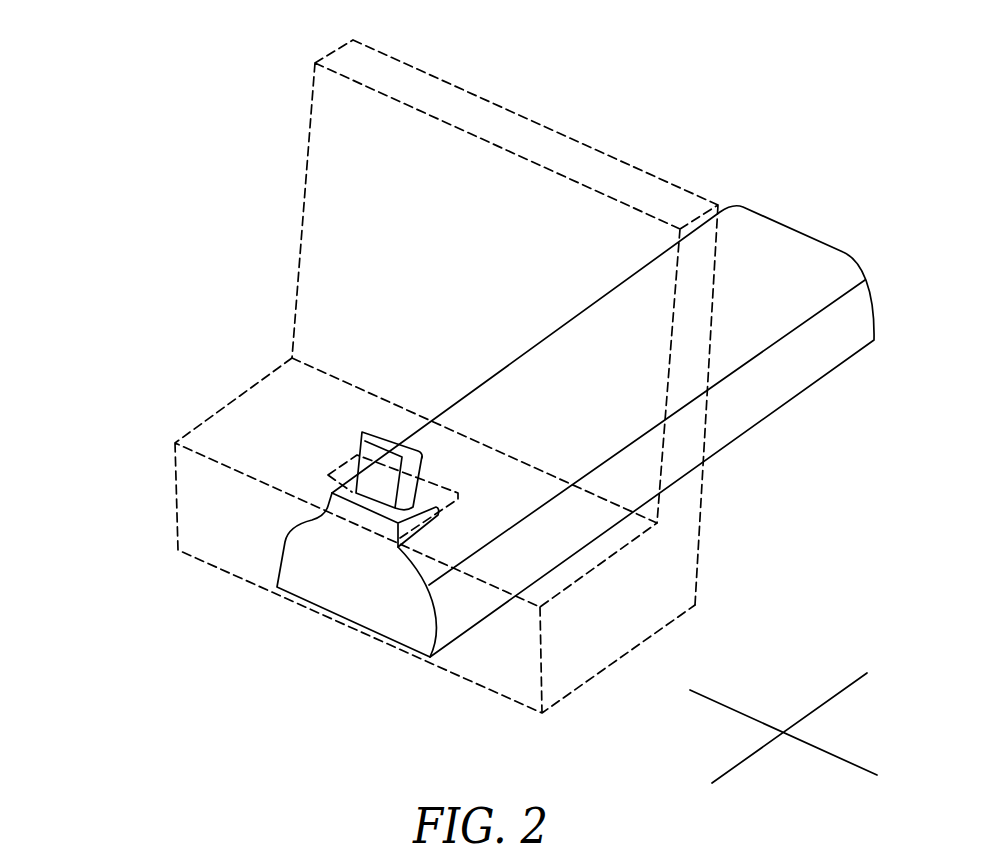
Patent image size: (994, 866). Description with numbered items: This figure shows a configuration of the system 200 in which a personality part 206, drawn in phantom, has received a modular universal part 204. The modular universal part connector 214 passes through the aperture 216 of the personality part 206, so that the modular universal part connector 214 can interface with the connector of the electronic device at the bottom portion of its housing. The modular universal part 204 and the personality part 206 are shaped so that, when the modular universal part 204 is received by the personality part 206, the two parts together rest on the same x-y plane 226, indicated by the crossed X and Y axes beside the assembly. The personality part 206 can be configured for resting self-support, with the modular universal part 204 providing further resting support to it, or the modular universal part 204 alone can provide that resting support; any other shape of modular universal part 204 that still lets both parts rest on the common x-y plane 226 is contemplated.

The system 200 is at (88, 34).
The modular universal part 204 is at (790, 227).
The personality part 206 is at (423, 70).
The modular universal part connector 214 is at (378, 427).
The aperture 216 is at (350, 462).
The x-y plane 226 is at (828, 750).